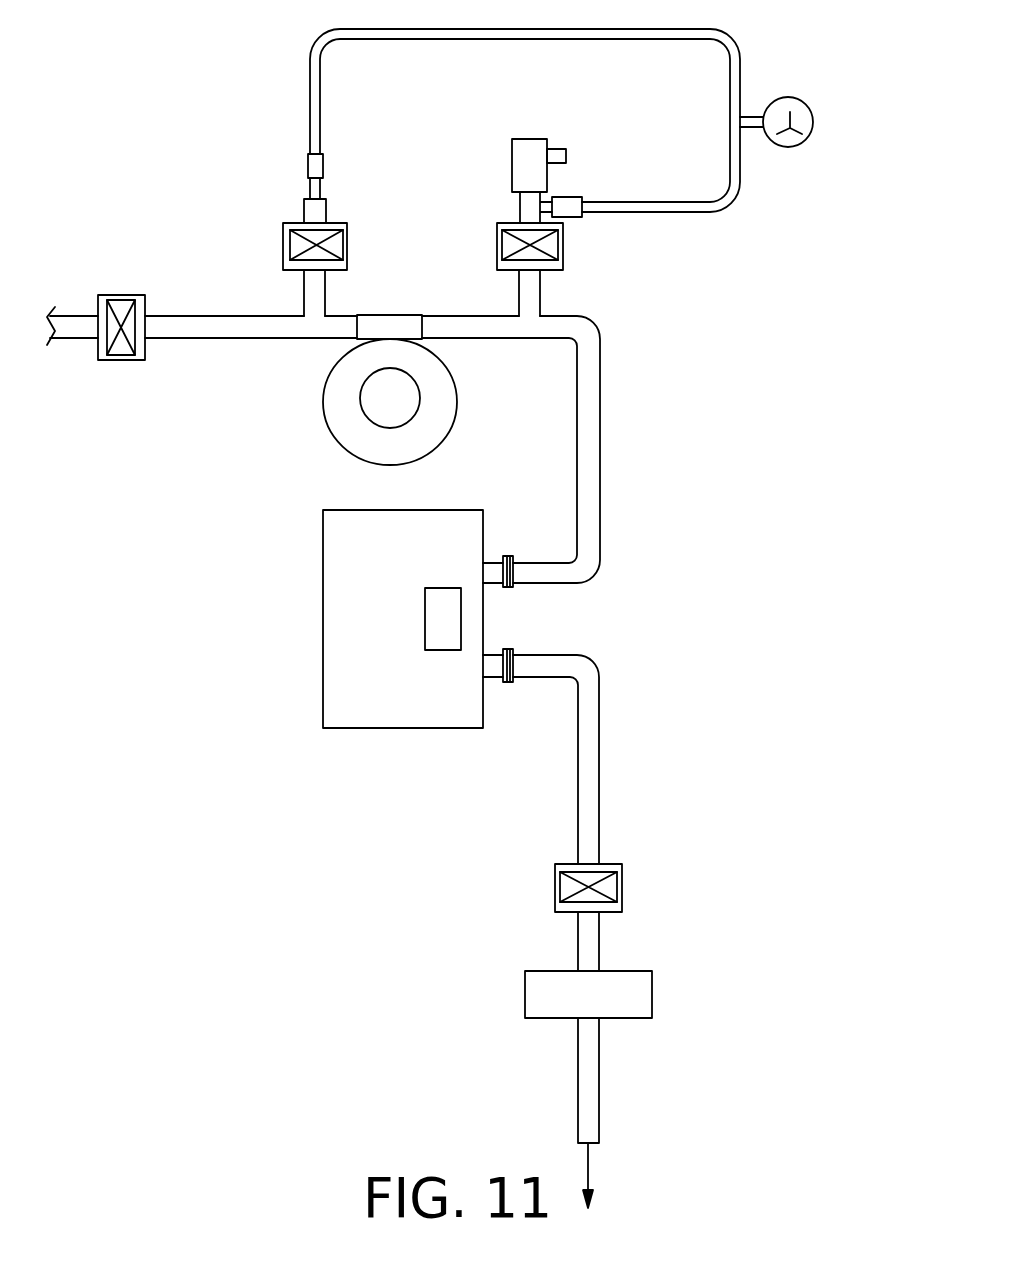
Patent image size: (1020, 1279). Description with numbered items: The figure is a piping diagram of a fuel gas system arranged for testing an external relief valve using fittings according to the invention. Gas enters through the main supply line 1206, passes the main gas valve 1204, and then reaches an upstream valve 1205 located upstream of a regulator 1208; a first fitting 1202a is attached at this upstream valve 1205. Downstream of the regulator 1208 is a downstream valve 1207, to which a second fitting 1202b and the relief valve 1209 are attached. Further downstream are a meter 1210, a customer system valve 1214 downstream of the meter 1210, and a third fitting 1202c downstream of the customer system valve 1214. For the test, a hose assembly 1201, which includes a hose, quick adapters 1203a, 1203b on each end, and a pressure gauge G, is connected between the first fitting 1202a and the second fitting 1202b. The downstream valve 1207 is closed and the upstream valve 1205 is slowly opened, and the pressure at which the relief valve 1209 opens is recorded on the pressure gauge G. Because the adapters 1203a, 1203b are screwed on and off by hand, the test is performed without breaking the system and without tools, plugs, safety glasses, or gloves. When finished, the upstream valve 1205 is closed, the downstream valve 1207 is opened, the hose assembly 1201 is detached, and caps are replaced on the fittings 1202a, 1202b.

The hose assembly 1201 is at (733, 43).
The pressure gauge G is at (813, 115).
The relief valve 1209 is at (530, 138).
The first fitting 1202a is at (308, 191).
The second fitting 1202b is at (546, 193).
The third fitting 1202c is at (525, 995).
The adapter 1203a is at (323, 165).
The adapter 1203b is at (575, 198).
The main gas valve 1204 is at (123, 360).
The upstream valve 1205 is at (282, 250).
The main supply line 1206 is at (74, 316).
The downstream valve 1207 is at (565, 250).
The regulator 1208 is at (442, 430).
The meter 1210 is at (333, 583).
The customer system valve 1214 is at (555, 883).